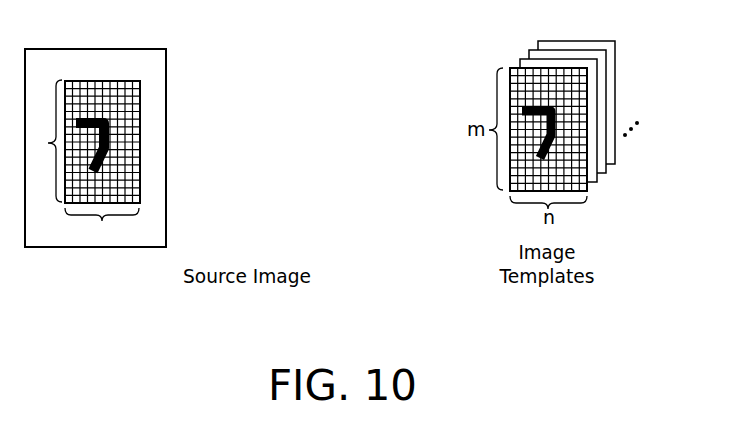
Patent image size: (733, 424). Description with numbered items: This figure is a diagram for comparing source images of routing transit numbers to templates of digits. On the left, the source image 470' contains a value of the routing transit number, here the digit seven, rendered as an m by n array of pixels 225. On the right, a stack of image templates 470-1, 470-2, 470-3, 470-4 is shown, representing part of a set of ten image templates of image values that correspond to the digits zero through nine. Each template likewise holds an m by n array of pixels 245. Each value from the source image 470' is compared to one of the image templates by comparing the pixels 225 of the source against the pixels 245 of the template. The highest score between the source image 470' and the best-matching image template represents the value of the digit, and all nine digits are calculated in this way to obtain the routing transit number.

The pixels of the source 225 is at (122, 81).
The source image 470' is at (95, 155).
The pixels of the image template 245 is at (517, 158).
The image template 470-1 is at (544, 151).
The image template 470-2 is at (597, 181).
The image template 470-3 is at (605, 170).
The image template 470-4 is at (617, 151).